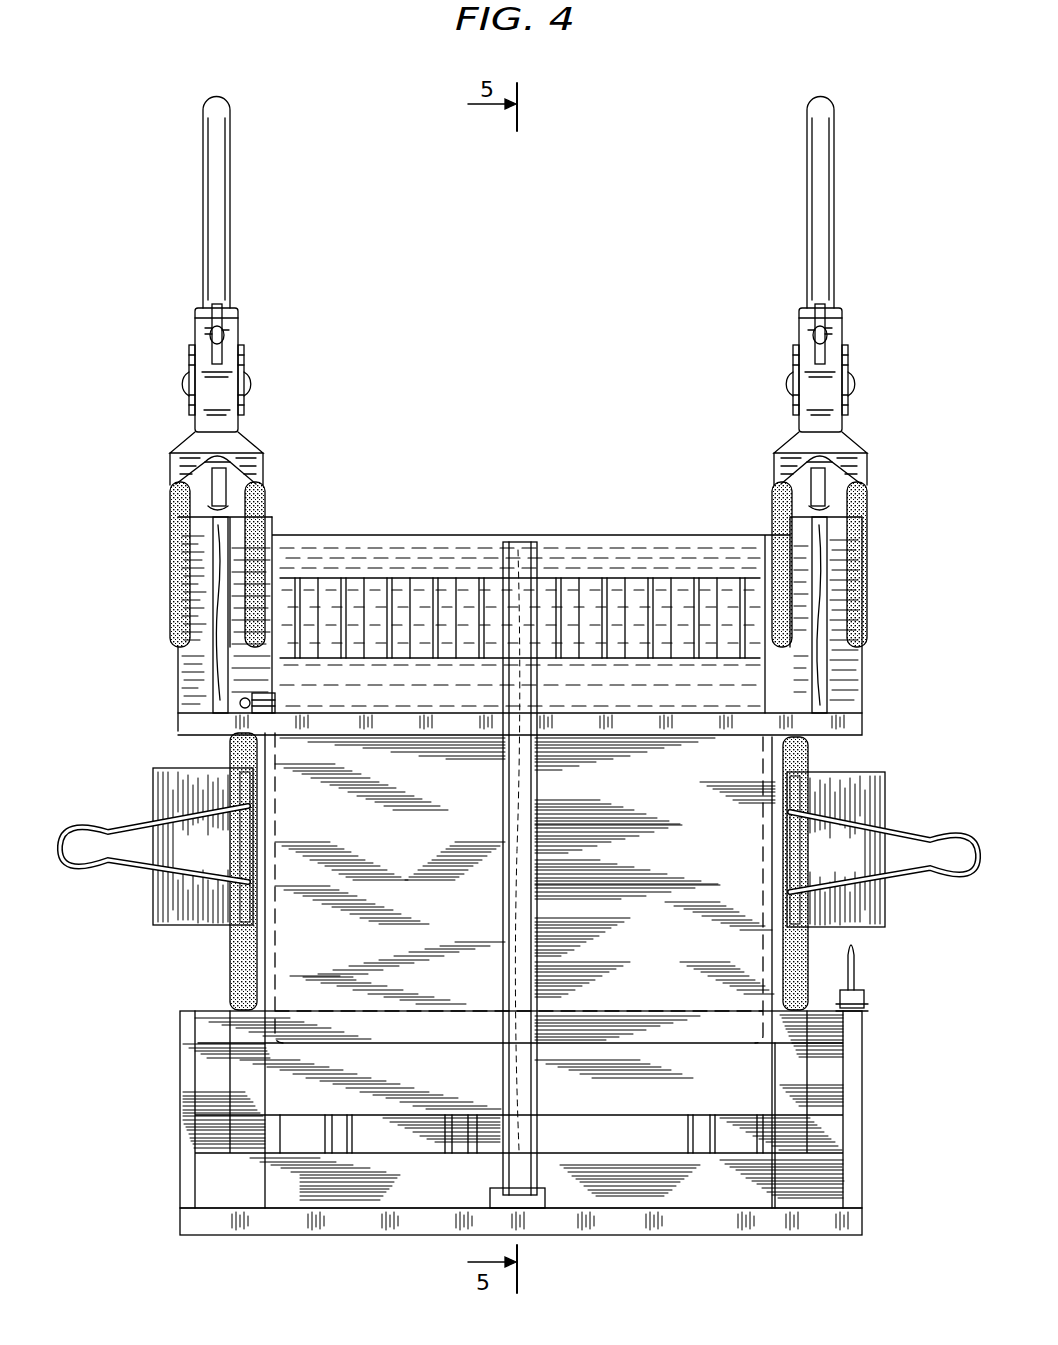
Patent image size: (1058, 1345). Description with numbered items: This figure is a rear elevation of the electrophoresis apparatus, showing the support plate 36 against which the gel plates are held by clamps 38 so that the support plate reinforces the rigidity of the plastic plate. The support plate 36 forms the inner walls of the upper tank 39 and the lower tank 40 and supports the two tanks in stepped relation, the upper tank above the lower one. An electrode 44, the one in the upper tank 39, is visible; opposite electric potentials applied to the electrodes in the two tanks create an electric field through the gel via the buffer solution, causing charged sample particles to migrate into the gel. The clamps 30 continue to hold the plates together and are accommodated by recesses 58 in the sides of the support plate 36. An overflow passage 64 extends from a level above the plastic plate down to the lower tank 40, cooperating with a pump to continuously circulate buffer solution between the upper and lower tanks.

The clamps 30 is at (153, 783).
The support plate 36 is at (656, 1193).
The clamps 38 is at (228, 237).
The upper tank 39 is at (850, 690).
The lower tank 40 is at (858, 1136).
The electrode 44 is at (330, 712).
The recesses 58 is at (200, 957).
The overflow passage 64 is at (515, 546).